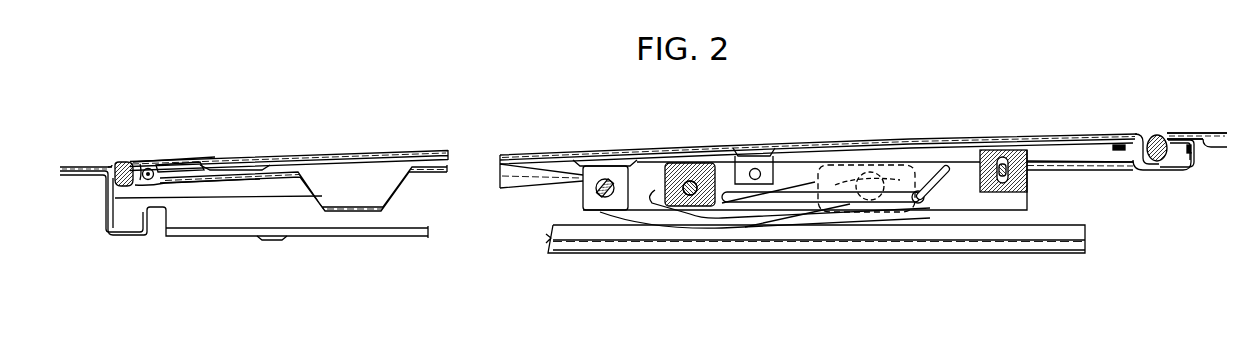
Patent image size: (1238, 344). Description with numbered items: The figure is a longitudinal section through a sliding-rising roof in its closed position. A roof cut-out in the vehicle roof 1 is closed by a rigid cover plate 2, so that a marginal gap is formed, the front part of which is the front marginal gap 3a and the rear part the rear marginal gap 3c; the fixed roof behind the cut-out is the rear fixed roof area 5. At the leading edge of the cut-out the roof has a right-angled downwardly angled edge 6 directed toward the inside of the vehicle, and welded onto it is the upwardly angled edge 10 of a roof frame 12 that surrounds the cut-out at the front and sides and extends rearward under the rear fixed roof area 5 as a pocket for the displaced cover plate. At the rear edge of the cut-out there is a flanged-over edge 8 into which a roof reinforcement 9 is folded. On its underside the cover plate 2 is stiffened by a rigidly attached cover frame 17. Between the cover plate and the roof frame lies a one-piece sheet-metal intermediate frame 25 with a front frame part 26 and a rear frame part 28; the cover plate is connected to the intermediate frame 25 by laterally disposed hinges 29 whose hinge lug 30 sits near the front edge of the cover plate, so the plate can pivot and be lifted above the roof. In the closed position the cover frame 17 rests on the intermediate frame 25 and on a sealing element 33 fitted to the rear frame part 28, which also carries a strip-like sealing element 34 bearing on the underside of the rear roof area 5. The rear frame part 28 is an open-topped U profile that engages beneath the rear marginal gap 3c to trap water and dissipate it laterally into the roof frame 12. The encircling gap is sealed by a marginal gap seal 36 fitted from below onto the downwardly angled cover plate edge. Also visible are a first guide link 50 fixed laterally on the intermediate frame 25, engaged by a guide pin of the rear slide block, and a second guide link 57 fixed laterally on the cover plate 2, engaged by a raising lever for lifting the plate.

The vehicle roof 1 is at (80, 165).
The cover plate 2 is at (355, 150).
The front marginal gap 3a is at (117, 155).
The rear marginal gap 3c is at (1164, 130).
The rear fixed roof area 5 is at (1214, 133).
The downwardly angled edge 6 is at (117, 195).
The flanged-over edge 8 is at (1170, 162).
The roof reinforcement 9 is at (1214, 146).
The upwardly angled edge 10 is at (108, 207).
The roof frame 12 is at (122, 237).
The cover frame 17 is at (262, 162).
The intermediate frame 25 is at (417, 182).
The front frame part 26 is at (376, 211).
The rear frame part 28 is at (1165, 172).
The hinge 29 is at (170, 162).
The hinge lug 30 is at (153, 169).
The sealing element 33 is at (1115, 144).
The strip-like sealing element 34 is at (1192, 150).
The marginal gap seal 36 is at (124, 164).
The first guide link 50 is at (966, 160).
The second guide link 57 is at (645, 196).